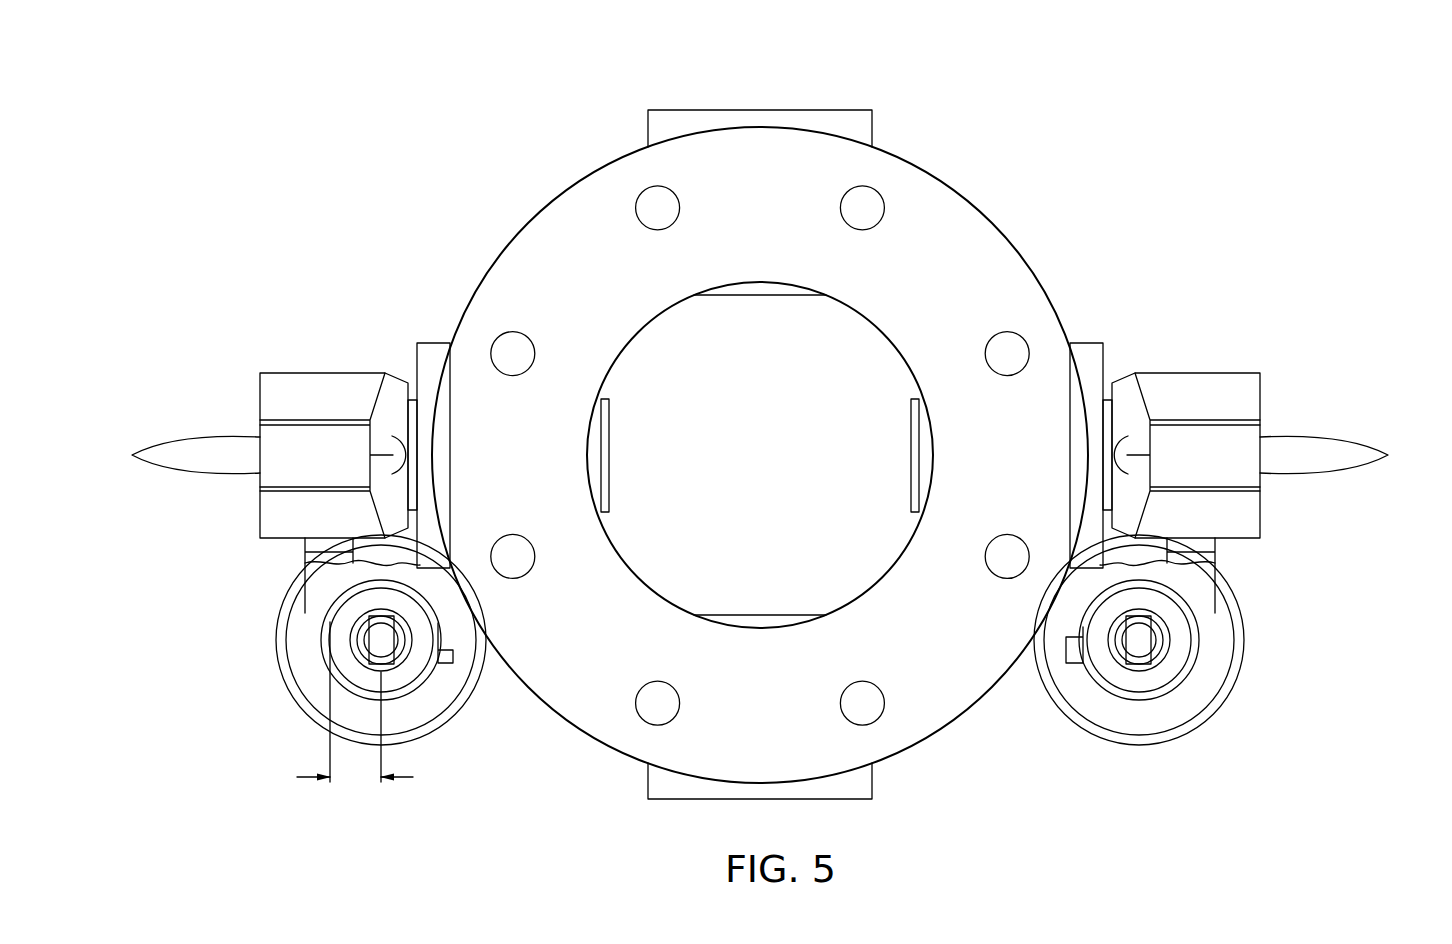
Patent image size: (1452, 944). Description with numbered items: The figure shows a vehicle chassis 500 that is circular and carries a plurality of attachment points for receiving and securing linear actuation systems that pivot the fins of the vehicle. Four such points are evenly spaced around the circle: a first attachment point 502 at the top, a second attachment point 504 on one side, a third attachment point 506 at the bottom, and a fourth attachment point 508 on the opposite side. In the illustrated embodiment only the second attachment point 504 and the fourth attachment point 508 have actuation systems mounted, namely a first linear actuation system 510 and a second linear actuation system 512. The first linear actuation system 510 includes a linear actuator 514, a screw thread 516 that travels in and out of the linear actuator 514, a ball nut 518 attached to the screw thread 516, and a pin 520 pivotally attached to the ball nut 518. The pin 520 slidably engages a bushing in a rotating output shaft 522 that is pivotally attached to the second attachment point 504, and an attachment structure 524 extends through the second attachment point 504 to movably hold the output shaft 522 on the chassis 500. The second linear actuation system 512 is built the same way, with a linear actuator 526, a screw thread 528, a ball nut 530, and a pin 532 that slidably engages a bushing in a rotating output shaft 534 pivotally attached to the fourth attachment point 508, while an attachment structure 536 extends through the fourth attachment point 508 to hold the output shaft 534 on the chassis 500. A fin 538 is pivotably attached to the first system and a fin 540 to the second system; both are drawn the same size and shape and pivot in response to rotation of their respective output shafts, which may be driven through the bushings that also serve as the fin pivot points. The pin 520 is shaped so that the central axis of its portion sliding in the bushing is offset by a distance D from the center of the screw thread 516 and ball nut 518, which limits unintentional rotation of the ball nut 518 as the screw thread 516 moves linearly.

The chassis 500 is at (1008, 168).
The first attachment point 502 is at (664, 105).
The second attachment point 504 is at (616, 447).
The third attachment point 506 is at (768, 598).
The fourth attachment point 508 is at (847, 438).
The first linear actuation system 510 is at (374, 689).
The second linear actuation system 512 is at (1155, 689).
The linear actuator 514 is at (460, 710).
The screw thread 516 is at (372, 640).
The ball nut 518 is at (420, 634).
The pin 520 is at (327, 593).
The rotating output shaft 522 is at (297, 365).
The attachment structure 524 is at (671, 438).
The linear actuator 526 is at (1058, 710).
The screw thread 528 is at (1150, 640).
The ball nut 530 is at (1103, 660).
The pin 532 is at (1192, 592).
The rotating output shaft 534 is at (1222, 365).
The attachment structure 536 is at (905, 447).
The fin 538 is at (140, 437).
The fin 540 is at (1380, 437).